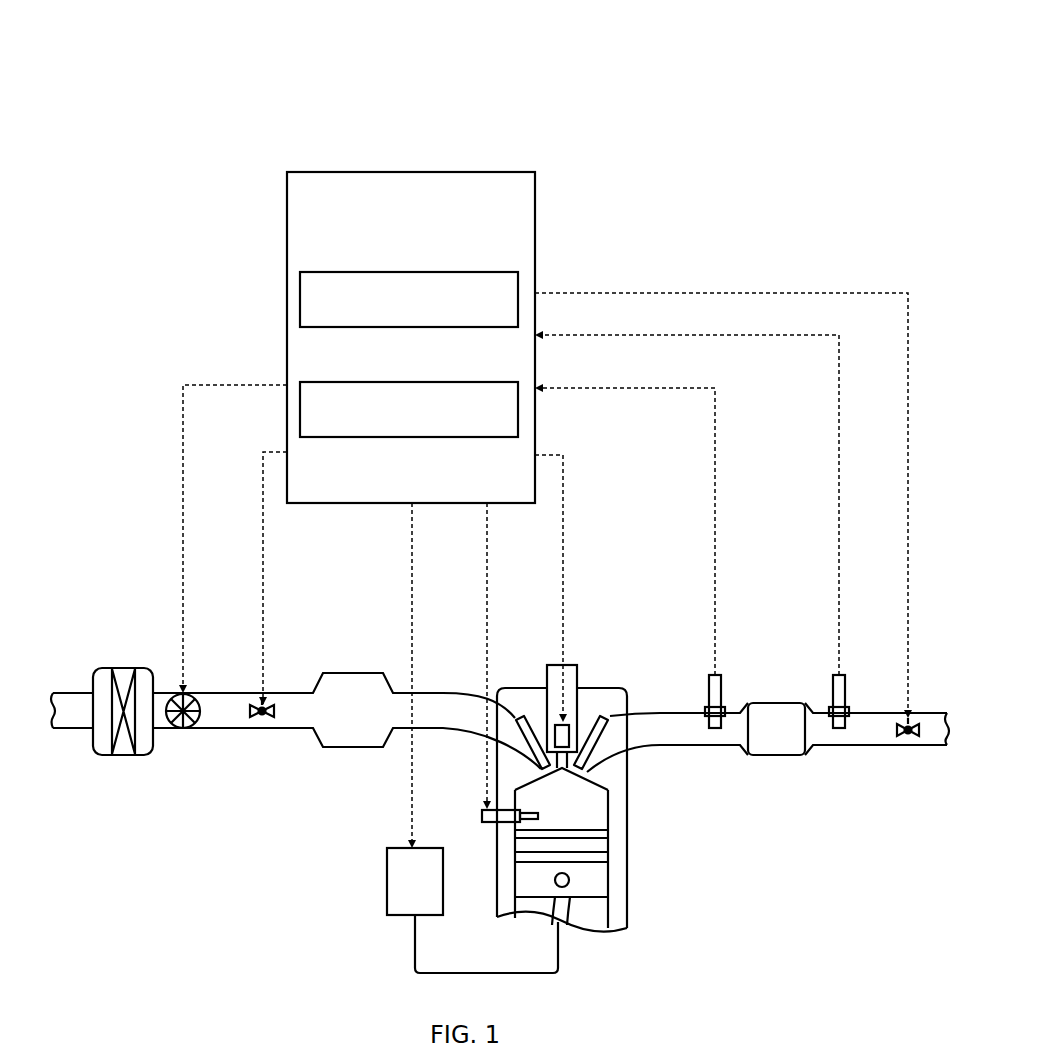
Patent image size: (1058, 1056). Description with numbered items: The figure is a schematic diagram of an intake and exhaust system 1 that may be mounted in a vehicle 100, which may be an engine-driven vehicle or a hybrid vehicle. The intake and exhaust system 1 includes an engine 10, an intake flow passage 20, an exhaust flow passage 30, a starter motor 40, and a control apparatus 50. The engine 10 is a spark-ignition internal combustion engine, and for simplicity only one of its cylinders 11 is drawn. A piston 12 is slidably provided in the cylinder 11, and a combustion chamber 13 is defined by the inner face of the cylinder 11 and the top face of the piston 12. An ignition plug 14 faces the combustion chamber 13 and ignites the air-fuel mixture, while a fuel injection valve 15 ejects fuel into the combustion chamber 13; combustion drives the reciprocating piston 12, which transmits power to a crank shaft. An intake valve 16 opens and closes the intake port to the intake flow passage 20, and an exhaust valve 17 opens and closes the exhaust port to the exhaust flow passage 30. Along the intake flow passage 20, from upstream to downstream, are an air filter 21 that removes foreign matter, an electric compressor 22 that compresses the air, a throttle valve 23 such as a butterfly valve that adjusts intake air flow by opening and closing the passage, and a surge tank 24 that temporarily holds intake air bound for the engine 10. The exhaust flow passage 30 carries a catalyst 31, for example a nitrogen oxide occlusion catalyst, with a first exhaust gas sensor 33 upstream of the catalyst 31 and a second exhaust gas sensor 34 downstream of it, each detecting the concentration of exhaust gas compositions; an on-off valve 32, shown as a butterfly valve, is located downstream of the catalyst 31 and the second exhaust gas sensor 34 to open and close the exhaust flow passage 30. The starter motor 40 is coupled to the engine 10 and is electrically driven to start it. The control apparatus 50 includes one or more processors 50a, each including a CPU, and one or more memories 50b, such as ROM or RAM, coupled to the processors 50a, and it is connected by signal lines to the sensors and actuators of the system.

The vehicle 100 is at (105, 75).
The intake and exhaust system 1 is at (152, 155).
The engine 10 is at (570, 617).
The cylinder 11 is at (630, 855).
The piston 12 is at (590, 882).
The combustion chamber 13 is at (590, 818).
The ignition plug 14 is at (578, 733).
The fuel injection valve 15 is at (485, 823).
The intake valve 16 is at (520, 715).
The exhaust valve 17 is at (627, 694).
The intake flow passage 20 is at (68, 690).
The air filter 21 is at (123, 756).
The electric compressor 22 is at (193, 730).
The throttle valve 23 is at (274, 718).
The surge tank 24 is at (352, 748).
The exhaust flow passage 30 is at (678, 712).
The catalyst 31 is at (777, 756).
The on-off valve 32 is at (903, 737).
The first exhaust gas sensor 33 is at (721, 683).
The second exhaust gas sensor 34 is at (831, 692).
The starter motor 40 is at (387, 878).
The control apparatus 50 is at (462, 172).
The processor 50a is at (470, 272).
The memory 50b is at (470, 382).